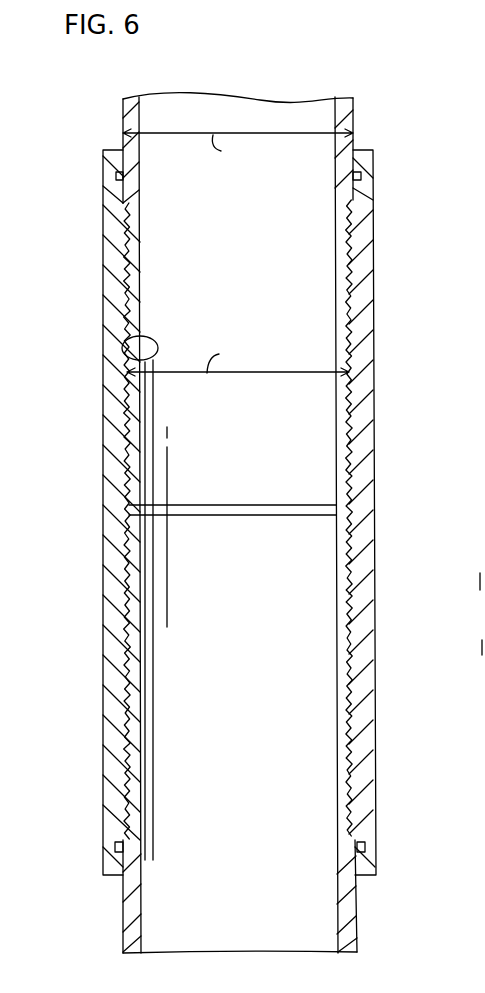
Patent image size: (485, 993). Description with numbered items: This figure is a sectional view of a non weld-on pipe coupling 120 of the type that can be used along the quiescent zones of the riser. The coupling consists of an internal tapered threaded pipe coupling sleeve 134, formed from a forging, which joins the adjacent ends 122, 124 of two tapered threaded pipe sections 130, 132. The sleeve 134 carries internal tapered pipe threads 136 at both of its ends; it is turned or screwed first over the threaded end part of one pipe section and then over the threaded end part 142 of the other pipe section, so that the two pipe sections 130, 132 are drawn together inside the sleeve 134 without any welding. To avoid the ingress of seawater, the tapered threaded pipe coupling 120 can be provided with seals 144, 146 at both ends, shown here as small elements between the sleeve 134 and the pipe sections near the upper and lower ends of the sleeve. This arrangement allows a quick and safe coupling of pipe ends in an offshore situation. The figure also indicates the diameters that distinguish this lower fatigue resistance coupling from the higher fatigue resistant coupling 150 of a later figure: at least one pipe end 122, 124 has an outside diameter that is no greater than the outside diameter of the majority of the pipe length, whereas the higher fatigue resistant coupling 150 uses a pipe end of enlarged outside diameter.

The non weld-on pipe coupling 120 is at (64, 493).
The adjacent end of pipe section 122 is at (133, 478).
The adjacent end of pipe section 124 is at (109, 540).
The tapered threaded pipe section 130 is at (115, 114).
The tapered threaded pipe section 132 is at (119, 922).
The internal tapered threaded pipe coupling sleeve 134 is at (100, 641).
The internal tapered threads 136 is at (122, 351).
The threaded end part 142 is at (127, 718).
The seal 144 is at (117, 176).
The seal 146 is at (125, 300).
The higher fatigue resistant coupling 150 is at (468, 584).